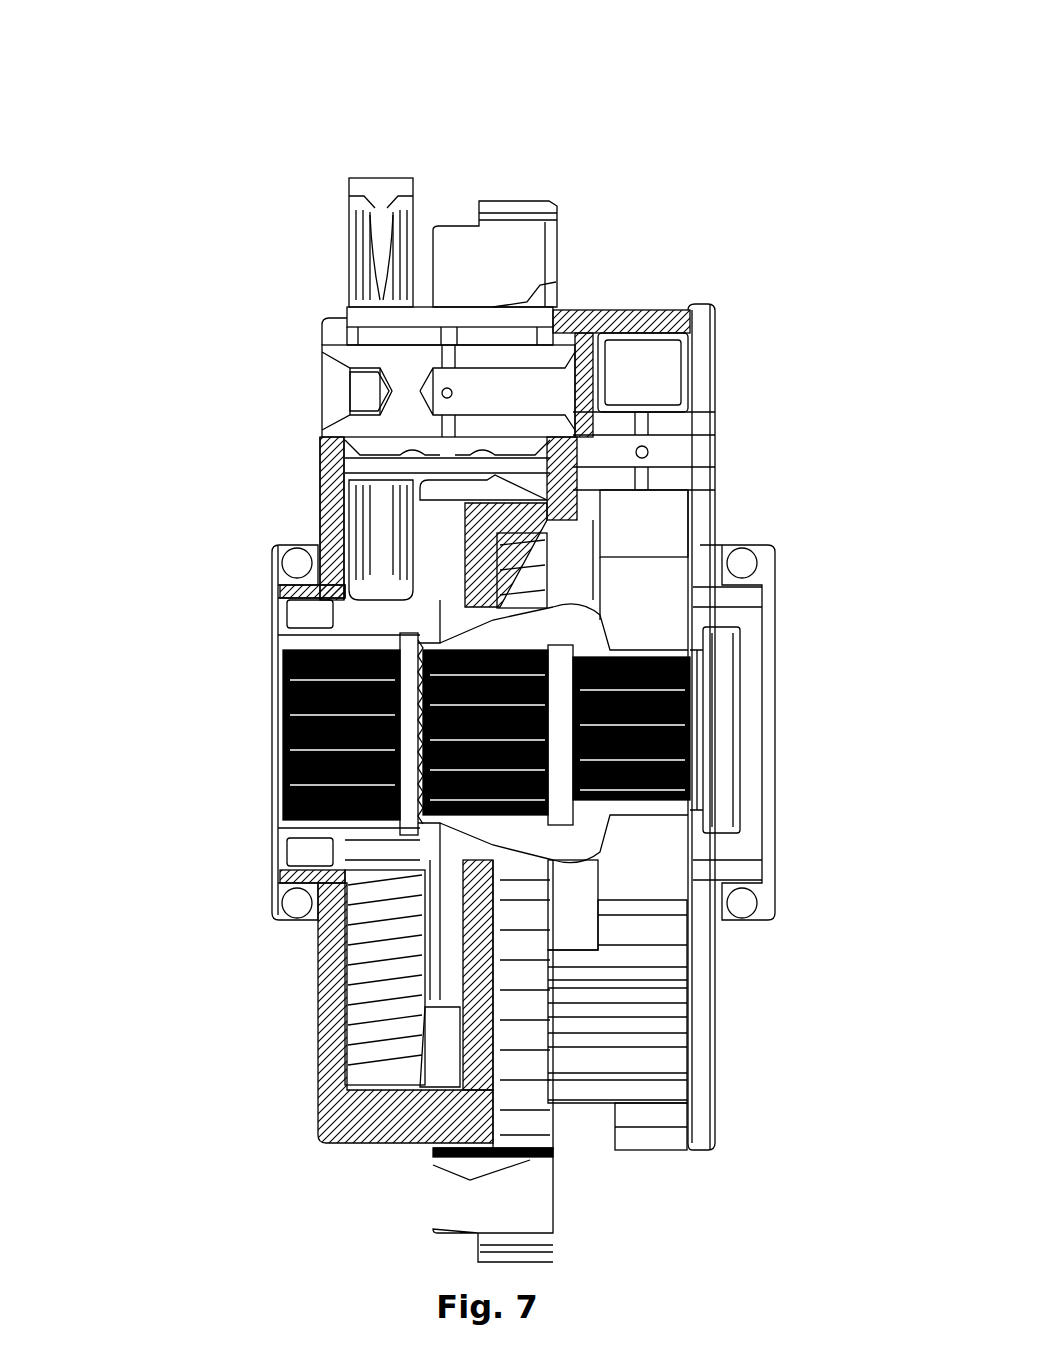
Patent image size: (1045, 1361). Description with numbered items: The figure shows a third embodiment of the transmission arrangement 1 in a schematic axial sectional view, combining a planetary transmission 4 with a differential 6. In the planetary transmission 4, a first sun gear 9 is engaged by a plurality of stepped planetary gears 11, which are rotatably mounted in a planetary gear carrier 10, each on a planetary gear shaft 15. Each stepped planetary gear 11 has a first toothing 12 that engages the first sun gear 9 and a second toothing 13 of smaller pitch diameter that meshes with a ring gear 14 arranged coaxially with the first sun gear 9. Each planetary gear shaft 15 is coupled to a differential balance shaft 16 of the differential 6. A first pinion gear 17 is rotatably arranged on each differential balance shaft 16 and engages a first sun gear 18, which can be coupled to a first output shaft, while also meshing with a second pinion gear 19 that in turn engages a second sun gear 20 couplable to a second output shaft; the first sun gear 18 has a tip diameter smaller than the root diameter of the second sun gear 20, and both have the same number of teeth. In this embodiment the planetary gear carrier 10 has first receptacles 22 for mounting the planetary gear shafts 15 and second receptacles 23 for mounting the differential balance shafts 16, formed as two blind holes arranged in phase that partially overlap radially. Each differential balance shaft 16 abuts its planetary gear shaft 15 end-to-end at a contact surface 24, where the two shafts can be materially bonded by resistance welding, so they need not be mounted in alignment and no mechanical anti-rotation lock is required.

The transmission arrangement 1 is at (440, 165).
The planetary transmission 4 is at (383, 140).
The differential 6 is at (675, 255).
The first sun gear 9 is at (302, 634).
The planetary gear carrier 10 is at (318, 490).
The stepped planetary gears 11 is at (380, 310).
The first toothing 12 is at (365, 190).
The second toothing 13 is at (525, 300).
The ring gear 14 is at (473, 283).
The planetary gear shaft 15 is at (353, 387).
The differential balance shaft 16 is at (688, 408).
The first pinion gear 17 is at (650, 362).
The first sun gear 18 is at (655, 578).
The second pinion gear 19 is at (665, 1063).
The second sun gear 20 is at (572, 920).
The first receptacles 22 is at (312, 430).
The second receptacles 23 is at (585, 423).
The contact surface 24 is at (577, 393).